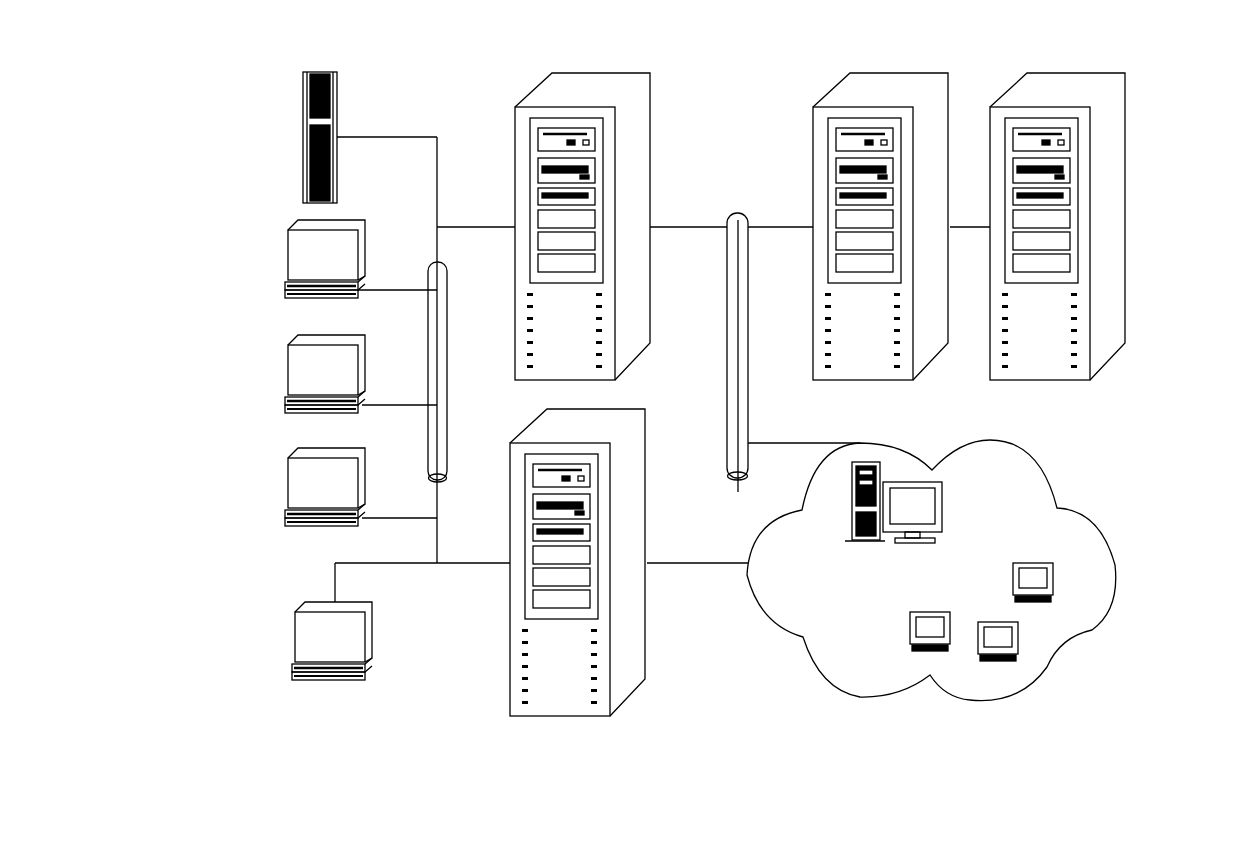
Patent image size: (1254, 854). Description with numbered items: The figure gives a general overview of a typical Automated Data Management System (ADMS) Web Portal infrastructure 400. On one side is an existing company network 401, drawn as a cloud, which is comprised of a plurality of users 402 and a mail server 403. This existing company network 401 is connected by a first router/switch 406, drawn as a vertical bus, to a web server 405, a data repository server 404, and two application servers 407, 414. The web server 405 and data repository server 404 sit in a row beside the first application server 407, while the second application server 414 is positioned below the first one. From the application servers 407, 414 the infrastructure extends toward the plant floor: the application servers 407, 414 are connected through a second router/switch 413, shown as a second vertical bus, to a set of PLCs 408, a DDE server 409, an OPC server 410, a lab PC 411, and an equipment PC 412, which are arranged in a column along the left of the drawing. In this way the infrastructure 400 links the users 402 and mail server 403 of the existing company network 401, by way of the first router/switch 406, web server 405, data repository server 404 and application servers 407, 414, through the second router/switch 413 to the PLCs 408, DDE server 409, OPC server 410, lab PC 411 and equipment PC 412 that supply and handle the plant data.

The Automated Data Management System Web Portal infrastructure 400 is at (1162, 46).
The existing company network 401 is at (1047, 665).
The users 402 is at (1045, 610).
The mail server 403 is at (957, 518).
The data repository server 404 is at (1123, 317).
The web server 405 is at (903, 77).
The first router/switch 406 is at (747, 220).
The application server 407 is at (590, 68).
The PLCs 408 is at (308, 83).
The DDE server 409 is at (295, 243).
The OPC server 410 is at (290, 365).
The lab PC 411 is at (290, 468).
The equipment PC 412 is at (302, 640).
The second router/switch 413 is at (447, 482).
The application server 414 is at (508, 697).